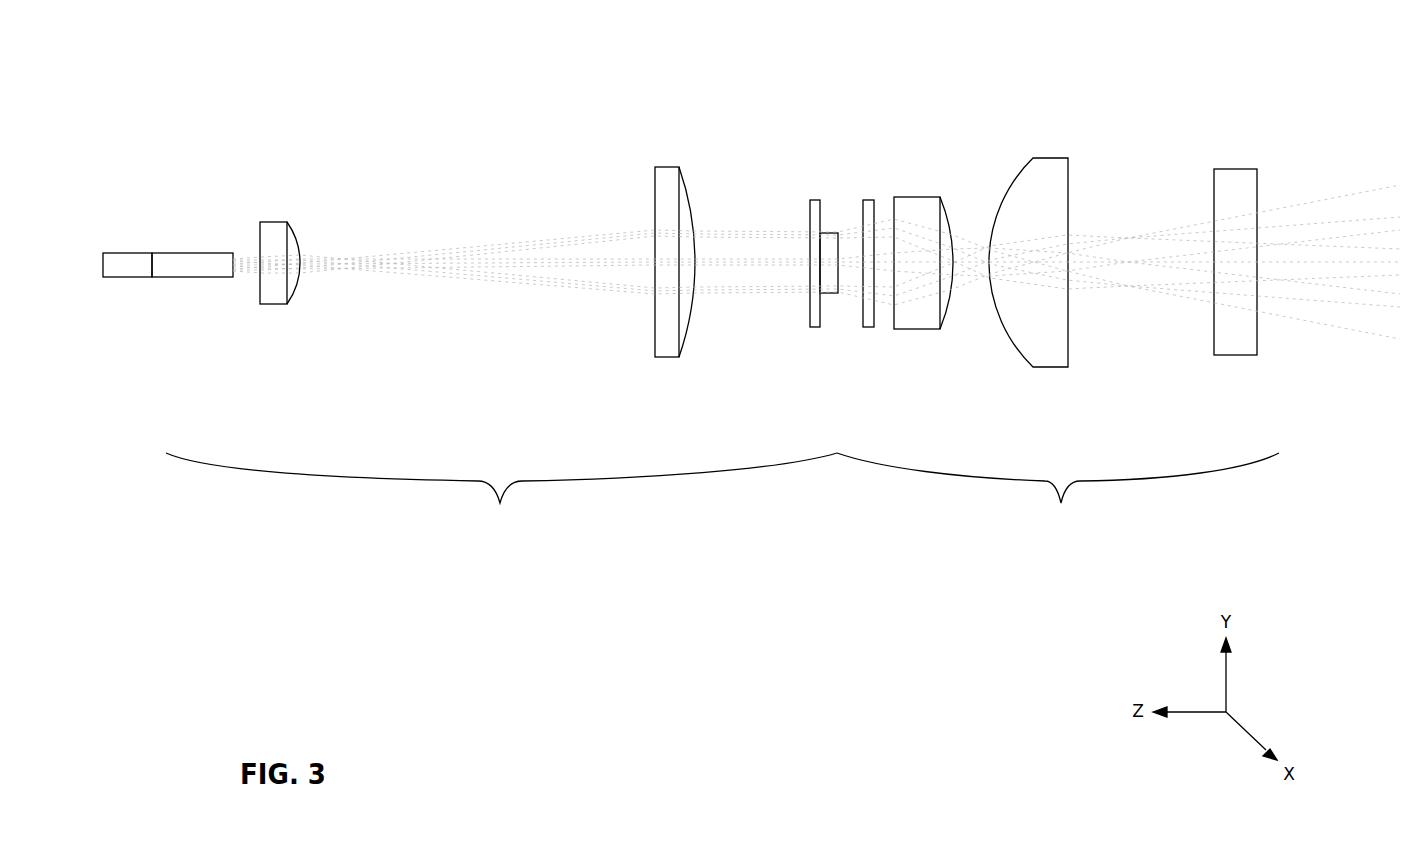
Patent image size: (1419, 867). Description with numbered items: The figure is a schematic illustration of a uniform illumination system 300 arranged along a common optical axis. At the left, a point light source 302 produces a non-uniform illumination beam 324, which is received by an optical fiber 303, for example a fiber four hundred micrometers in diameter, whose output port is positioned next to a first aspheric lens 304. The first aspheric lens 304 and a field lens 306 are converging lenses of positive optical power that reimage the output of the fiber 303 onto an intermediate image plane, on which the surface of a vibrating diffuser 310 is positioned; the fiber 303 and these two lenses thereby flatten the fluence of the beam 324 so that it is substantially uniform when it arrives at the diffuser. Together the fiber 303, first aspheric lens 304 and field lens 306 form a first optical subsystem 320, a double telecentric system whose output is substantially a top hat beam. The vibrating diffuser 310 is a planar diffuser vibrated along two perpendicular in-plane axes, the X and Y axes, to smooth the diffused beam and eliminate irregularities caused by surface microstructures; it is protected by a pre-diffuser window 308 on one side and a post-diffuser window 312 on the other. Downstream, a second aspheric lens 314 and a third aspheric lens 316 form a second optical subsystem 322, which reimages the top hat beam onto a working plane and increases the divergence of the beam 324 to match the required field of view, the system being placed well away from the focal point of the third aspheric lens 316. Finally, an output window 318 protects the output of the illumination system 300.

The uniform illumination system 300 is at (377, 80).
The point light source 302 is at (140, 252).
The optical fiber 303 is at (207, 278).
The first aspheric lens 304 is at (272, 305).
The field lens 306 is at (665, 358).
The pre-diffuser window 308 is at (812, 199).
The vibrating diffuser 310 is at (843, 309).
The post-diffuser window 312 is at (867, 199).
The second aspheric lens 314 is at (912, 330).
The third aspheric lens 316 is at (1047, 157).
The output window 318 is at (1228, 356).
The first optical subsystem 320 is at (501, 493).
The second optical subsystem 322 is at (1058, 493).
The illumination beam 324 is at (497, 226).